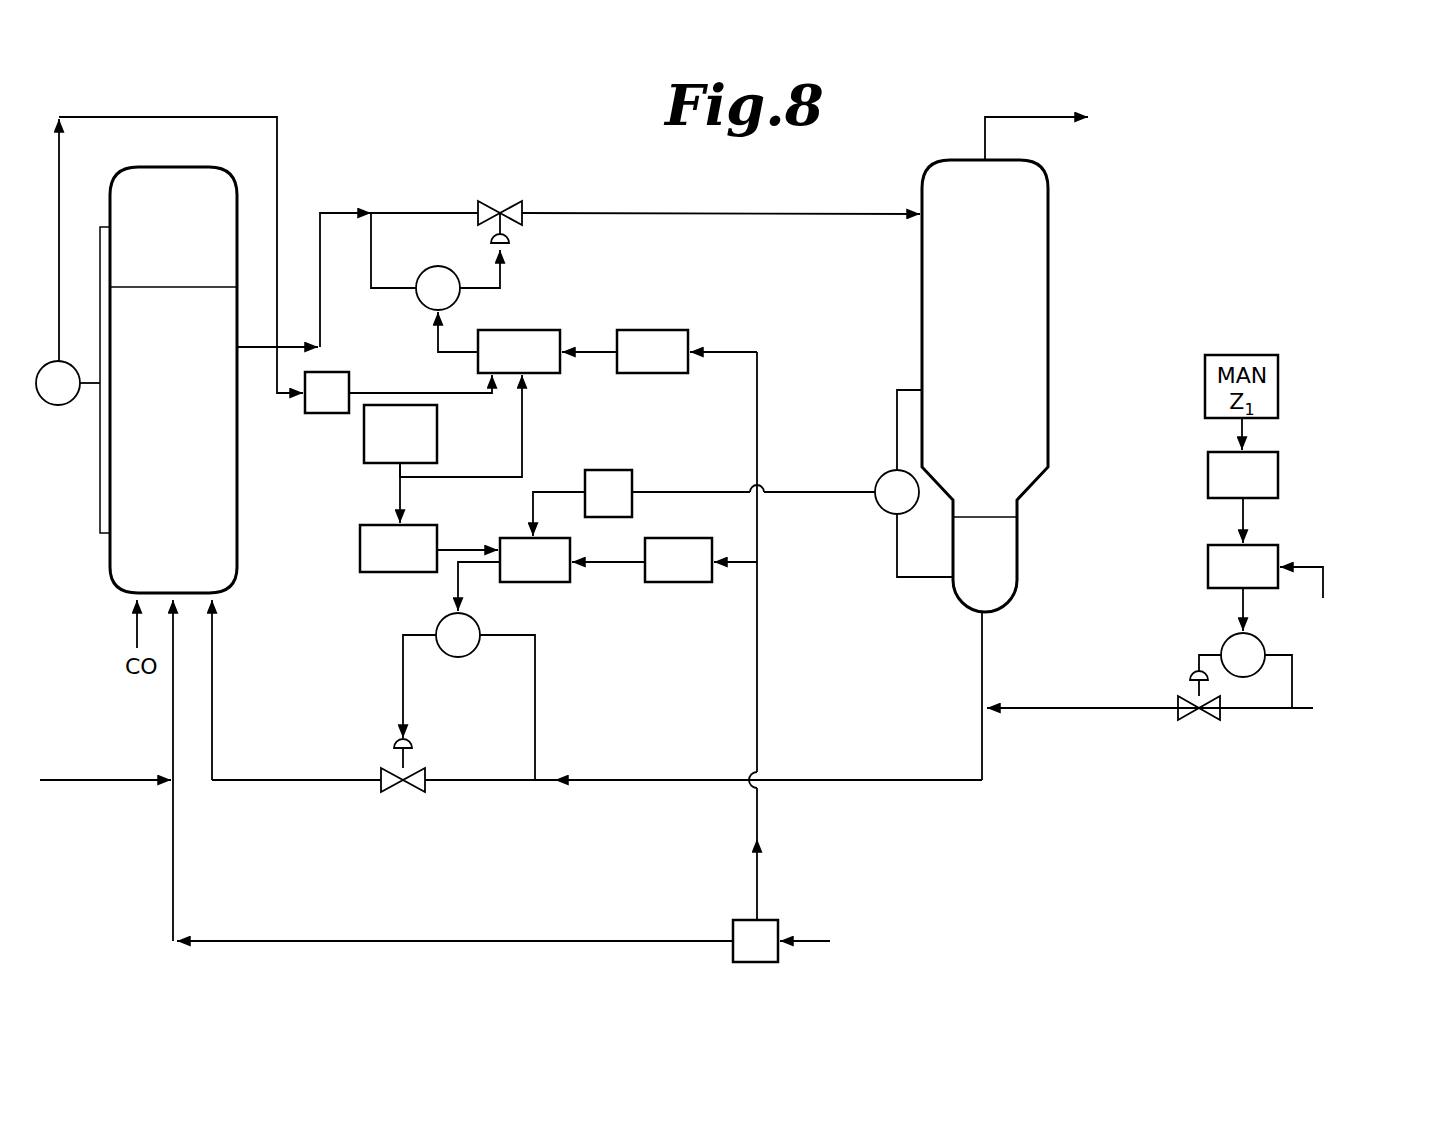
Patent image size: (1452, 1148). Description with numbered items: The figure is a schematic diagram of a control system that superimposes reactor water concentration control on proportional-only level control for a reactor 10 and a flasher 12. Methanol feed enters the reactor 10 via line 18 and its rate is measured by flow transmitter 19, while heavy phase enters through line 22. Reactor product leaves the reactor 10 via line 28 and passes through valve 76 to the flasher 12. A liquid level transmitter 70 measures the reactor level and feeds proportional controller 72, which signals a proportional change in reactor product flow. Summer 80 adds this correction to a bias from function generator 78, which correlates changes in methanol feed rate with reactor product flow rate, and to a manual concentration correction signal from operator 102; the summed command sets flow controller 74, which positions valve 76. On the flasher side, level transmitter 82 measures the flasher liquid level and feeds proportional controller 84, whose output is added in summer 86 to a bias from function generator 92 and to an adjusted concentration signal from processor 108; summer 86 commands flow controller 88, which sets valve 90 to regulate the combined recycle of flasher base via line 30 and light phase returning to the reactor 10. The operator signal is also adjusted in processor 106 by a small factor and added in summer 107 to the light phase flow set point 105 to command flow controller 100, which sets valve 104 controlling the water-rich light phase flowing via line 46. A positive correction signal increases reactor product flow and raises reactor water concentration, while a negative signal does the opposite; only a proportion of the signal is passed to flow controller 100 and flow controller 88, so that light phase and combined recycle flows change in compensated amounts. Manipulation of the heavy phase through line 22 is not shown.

The reactor 10 is at (237, 522).
The flasher 12 is at (1048, 343).
The line 18 is at (538, 940).
The flow transmitter 19 is at (733, 930).
The line 22 is at (122, 778).
The line 28 is at (280, 323).
The line 30 is at (980, 656).
The line 46 is at (1032, 706).
The liquid level transmitter 70 is at (52, 405).
The proportional controller 72 is at (349, 372).
The flow controller 74 is at (438, 266).
The valve 76 is at (518, 205).
The function generator 78 is at (665, 330).
The summer 80 is at (526, 330).
The level transmitter 82 is at (880, 510).
The proportional controller 84 is at (632, 472).
The summer 86 is at (512, 538).
The flow controller 88 is at (452, 657).
The valve 90 is at (398, 793).
The function generator 92 is at (672, 582).
The flow controller 100 is at (1225, 640).
The operator 102 is at (364, 430).
The valve 104 is at (1195, 720).
The light phase flow set point 105 is at (1325, 585).
The processor 106 is at (1208, 476).
The summer 107 is at (1208, 547).
The processor 108 is at (360, 560).